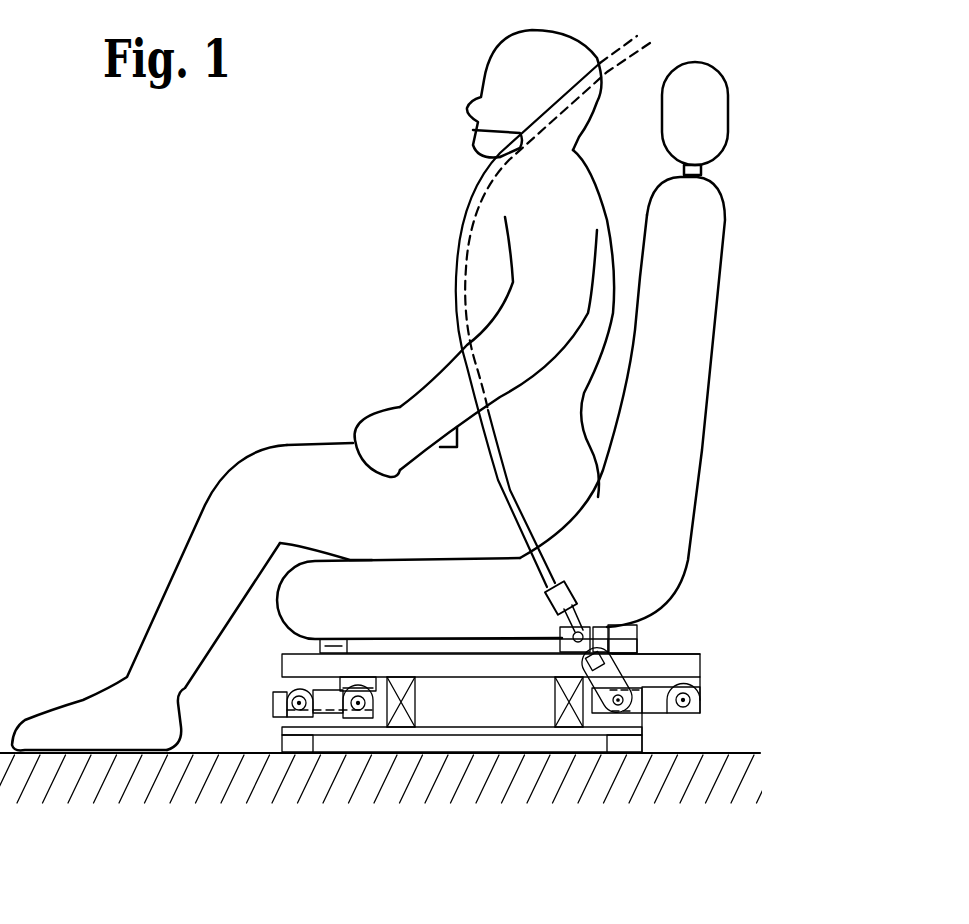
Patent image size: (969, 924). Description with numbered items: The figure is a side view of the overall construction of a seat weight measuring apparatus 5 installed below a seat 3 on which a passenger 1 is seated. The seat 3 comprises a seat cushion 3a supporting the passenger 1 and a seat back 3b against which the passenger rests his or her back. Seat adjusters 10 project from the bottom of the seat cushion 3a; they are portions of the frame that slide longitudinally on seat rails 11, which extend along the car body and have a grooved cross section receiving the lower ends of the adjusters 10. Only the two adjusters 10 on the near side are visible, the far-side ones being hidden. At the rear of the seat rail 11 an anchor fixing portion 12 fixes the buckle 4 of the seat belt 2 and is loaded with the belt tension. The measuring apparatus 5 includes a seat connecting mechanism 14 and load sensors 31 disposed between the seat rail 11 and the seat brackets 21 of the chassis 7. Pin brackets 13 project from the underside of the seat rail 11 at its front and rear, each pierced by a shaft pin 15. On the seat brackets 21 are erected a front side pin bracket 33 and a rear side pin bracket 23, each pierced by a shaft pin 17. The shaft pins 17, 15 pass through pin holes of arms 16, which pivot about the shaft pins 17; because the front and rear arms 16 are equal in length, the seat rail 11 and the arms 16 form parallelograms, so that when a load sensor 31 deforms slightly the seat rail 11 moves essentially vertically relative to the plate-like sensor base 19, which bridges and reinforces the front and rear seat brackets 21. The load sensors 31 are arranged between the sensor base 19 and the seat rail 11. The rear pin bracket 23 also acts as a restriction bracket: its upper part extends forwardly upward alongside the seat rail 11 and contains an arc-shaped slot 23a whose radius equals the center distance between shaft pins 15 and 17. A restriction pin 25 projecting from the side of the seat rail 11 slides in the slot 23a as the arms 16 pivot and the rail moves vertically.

The passenger 1 is at (472, 287).
The seat belt 2 is at (475, 137).
The seat 3 is at (536, 350).
The seat cushion 3a is at (403, 573).
The seat back 3b is at (700, 389).
The buckle 4 is at (547, 602).
The seat weight measuring apparatus 5 is at (467, 742).
The chassis 7 is at (738, 752).
The seat adjuster 10 is at (320, 642).
The seat rail 11 is at (435, 667).
The anchor fixing portion 12 is at (560, 637).
The pin bracket 13 is at (343, 690).
The seat connecting mechanism 14 is at (519, 770).
The shaft pin 15 is at (362, 705).
The arm 16 is at (345, 720).
The shaft pin 17 is at (308, 712).
The sensor base 19 is at (538, 732).
The seat bracket 21 is at (290, 743).
The rear side pin bracket 23 is at (640, 690).
The slot 23a is at (625, 703).
The restriction pin 25 is at (612, 652).
The load sensor 31 is at (418, 703).
The front side pin bracket 33 is at (273, 706).